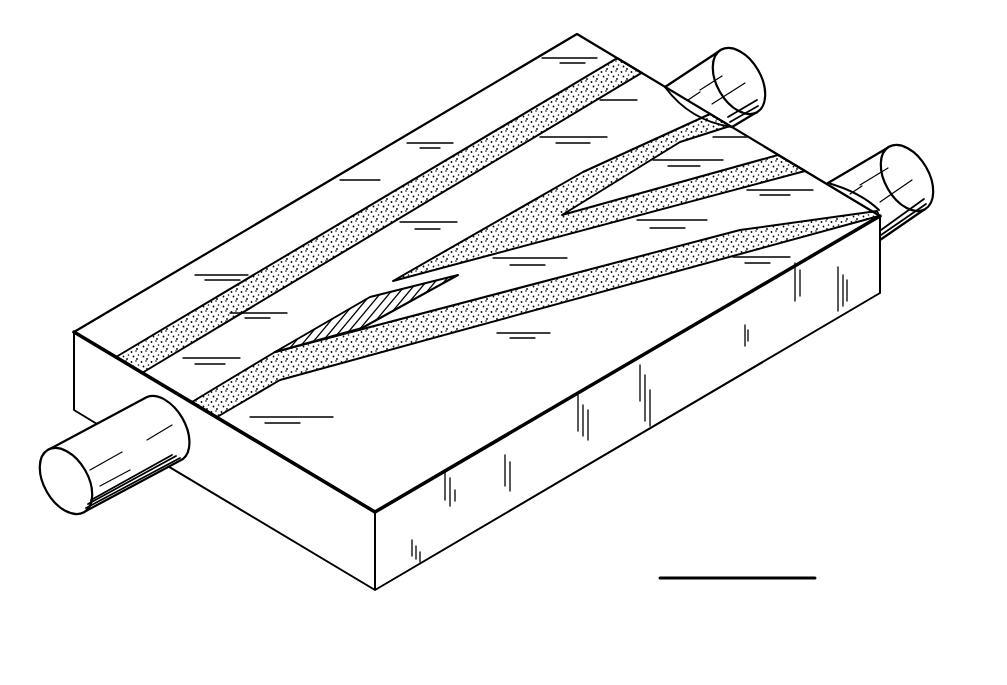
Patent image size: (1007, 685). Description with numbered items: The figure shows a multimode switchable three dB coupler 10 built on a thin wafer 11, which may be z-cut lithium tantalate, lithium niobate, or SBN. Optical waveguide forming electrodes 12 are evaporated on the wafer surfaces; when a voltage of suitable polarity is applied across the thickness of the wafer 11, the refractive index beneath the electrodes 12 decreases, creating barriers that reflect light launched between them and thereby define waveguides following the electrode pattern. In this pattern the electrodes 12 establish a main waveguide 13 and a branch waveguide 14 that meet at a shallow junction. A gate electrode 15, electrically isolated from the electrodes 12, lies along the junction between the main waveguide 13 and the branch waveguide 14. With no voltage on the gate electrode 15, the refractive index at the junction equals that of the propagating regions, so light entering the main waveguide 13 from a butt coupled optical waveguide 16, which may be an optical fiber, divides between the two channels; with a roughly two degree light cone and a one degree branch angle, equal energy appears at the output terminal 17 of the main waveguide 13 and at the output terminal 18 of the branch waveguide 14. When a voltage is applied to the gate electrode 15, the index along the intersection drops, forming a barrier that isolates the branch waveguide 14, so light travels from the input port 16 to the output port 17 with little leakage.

The multimode switchable 3 dB coupler 10 is at (278, 156).
The thin wafer 11 is at (173, 279).
The optical waveguide forming electrodes 12 is at (608, 67).
The main waveguide 13 is at (497, 172).
The branch waveguide 14 is at (804, 185).
The gate electrode 15 is at (388, 314).
The butt coupled optical waveguide 16 is at (137, 483).
The output terminal of the main optical waveguide 17 is at (643, 92).
The output terminal of the branch optical waveguide 18 is at (843, 192).